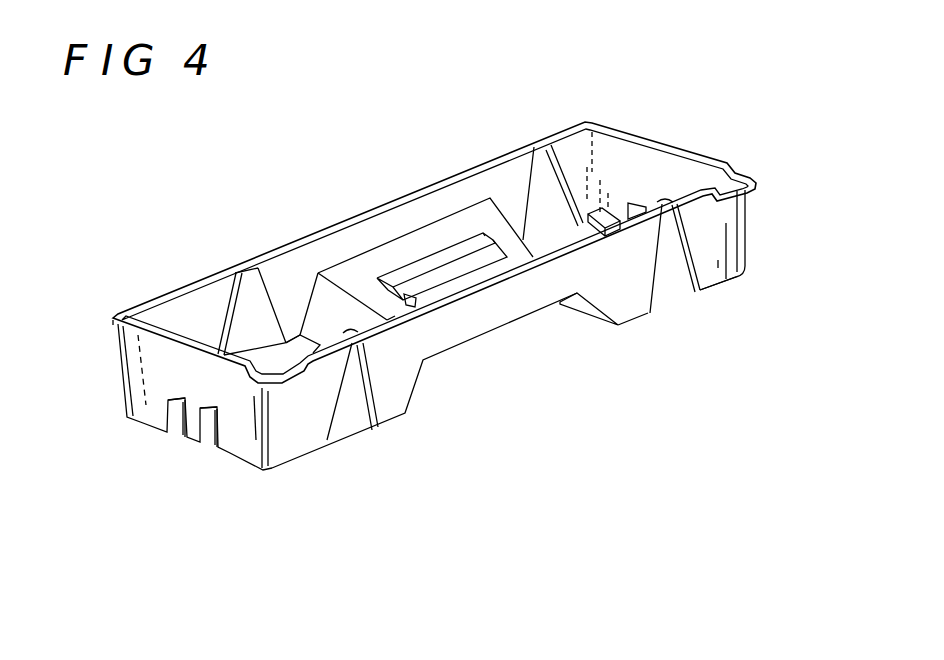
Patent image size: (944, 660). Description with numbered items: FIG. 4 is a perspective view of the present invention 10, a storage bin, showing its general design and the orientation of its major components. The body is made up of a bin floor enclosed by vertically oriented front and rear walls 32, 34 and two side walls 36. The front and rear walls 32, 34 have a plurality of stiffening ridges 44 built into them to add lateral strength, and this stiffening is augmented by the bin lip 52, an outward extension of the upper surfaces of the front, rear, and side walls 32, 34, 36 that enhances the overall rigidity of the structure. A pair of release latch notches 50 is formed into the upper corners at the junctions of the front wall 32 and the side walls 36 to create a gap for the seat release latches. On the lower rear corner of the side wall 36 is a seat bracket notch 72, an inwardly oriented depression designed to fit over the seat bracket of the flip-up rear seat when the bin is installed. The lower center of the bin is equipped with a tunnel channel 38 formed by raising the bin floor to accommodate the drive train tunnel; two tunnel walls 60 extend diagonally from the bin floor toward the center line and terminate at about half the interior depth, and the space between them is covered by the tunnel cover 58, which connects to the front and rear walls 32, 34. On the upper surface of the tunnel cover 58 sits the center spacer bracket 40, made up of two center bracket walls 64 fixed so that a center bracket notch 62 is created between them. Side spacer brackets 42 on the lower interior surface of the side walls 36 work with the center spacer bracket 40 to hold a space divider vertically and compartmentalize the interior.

The present invention 10 is at (199, 212).
The front wall 32 is at (610, 280).
The rear wall 34 is at (427, 182).
The side wall 36 is at (183, 373).
The tunnel channel 38 is at (390, 258).
The center spacer bracket 40 is at (475, 230).
The side spacer bracket 42 is at (184, 449).
The stiffening ridge 44 is at (253, 290).
The release latch notch 50 is at (288, 388).
The bin lip 52 is at (122, 308).
The tunnel cover 58 is at (345, 275).
The tunnel wall 60 is at (322, 305).
The center bracket notch 62 is at (467, 258).
The center bracket wall 64 is at (422, 267).
The seat bracket notch 72 is at (610, 213).